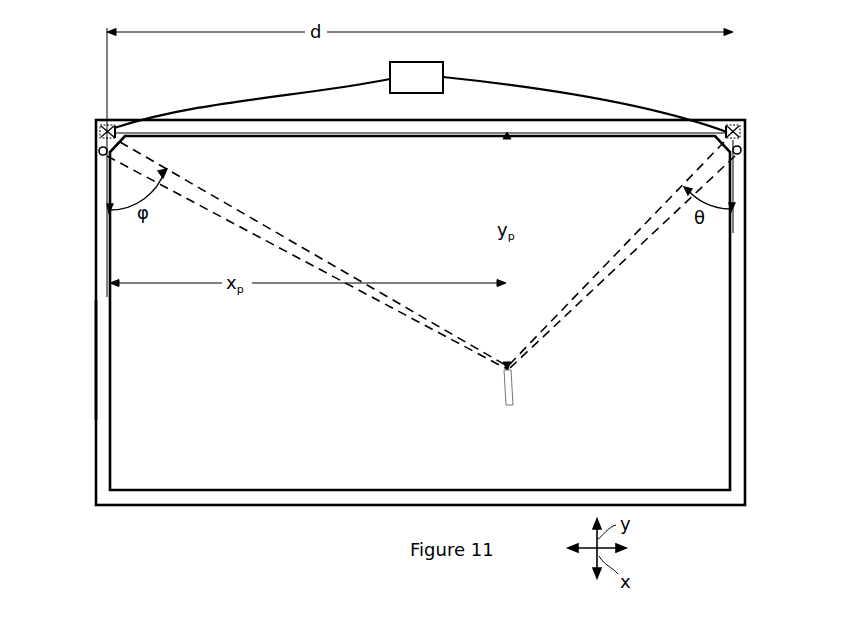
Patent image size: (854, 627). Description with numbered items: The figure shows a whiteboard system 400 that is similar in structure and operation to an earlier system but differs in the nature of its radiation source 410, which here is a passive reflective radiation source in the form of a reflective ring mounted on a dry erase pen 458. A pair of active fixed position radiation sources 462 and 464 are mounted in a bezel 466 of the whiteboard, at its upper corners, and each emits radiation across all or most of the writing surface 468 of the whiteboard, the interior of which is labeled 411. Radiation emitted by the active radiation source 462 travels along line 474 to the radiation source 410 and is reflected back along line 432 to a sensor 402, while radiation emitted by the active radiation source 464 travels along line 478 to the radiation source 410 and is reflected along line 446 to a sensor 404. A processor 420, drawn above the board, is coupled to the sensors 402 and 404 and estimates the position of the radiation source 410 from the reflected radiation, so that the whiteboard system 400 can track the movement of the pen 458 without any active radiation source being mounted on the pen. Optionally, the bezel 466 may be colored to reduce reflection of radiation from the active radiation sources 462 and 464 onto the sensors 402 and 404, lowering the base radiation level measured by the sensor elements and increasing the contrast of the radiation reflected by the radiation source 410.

The whiteboard system 400 is at (240, 528).
The sensor 402 is at (741, 131).
The sensor 404 is at (98, 131).
The radiation source 410 is at (509, 370).
The touch surface 411 is at (420, 313).
The processor 420 is at (420, 97).
The line 432 is at (596, 283).
The line 446 is at (305, 252).
The dry erase pen 458 is at (505, 398).
The active fixed position radiation source 462 is at (742, 153).
The active fixed position radiation source 464 is at (99, 152).
The bezel 466 is at (105, 344).
The writing surface 468 is at (185, 440).
The line 474 is at (603, 282).
The line 478 is at (357, 291).